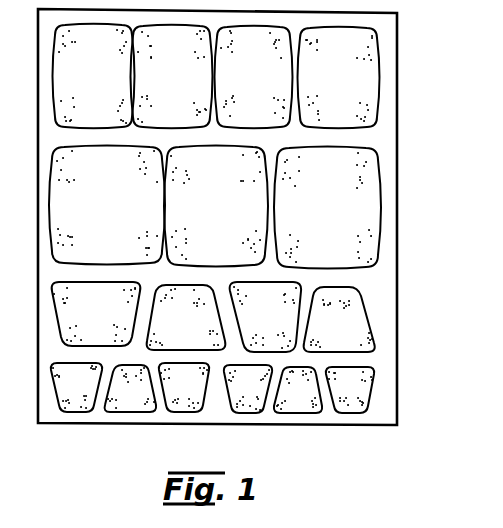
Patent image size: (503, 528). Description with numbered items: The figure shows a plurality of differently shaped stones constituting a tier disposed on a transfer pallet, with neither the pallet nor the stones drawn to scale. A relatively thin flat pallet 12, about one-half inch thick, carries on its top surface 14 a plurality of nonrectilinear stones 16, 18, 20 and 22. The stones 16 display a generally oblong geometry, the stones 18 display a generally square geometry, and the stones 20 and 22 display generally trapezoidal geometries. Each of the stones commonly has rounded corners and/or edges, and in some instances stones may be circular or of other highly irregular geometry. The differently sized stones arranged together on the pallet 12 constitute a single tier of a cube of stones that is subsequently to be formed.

The pallet 12 is at (397, 127).
The top surface 14 is at (382, 270).
The stones 16 is at (367, 72).
The stones 18 is at (353, 200).
The stones 20 is at (360, 318).
The stones 22 is at (363, 385).